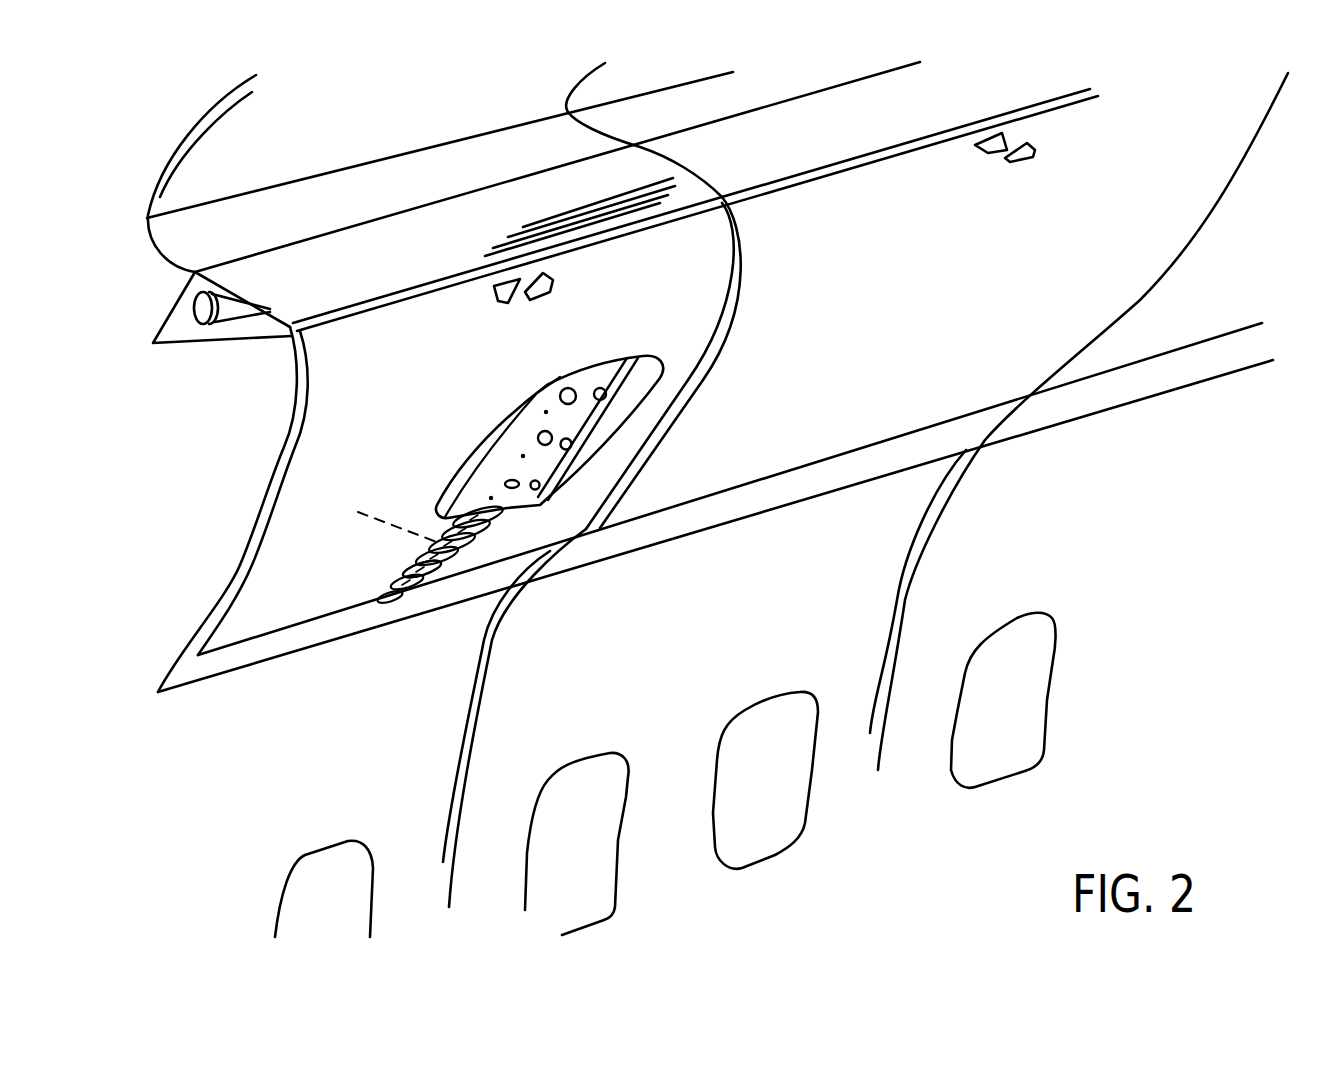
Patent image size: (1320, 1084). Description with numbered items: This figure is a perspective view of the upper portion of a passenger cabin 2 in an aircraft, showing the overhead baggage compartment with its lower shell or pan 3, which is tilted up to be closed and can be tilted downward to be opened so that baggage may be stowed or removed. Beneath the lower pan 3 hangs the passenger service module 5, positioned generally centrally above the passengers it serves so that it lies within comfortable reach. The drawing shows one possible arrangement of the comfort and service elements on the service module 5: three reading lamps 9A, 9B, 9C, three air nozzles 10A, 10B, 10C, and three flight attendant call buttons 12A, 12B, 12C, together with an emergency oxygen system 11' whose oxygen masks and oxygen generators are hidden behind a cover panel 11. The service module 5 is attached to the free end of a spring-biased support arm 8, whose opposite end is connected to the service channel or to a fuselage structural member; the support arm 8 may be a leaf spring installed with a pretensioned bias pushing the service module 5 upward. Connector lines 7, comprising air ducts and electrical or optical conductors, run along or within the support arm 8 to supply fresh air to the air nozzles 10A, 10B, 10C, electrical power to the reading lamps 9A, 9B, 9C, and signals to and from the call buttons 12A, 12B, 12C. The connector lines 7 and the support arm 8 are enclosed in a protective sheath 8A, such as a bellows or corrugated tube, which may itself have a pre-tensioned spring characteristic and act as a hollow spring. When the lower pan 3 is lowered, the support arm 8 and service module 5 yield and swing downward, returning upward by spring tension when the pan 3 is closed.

The passenger cabin 2 is at (1223, 535).
The lower shell or pan 3 is at (1133, 233).
The passenger service module 5 is at (511, 421).
The connector lines 7 is at (392, 517).
The spring-biased support arm 8 is at (362, 588).
The protective sheath 8A is at (417, 572).
The reading lamp 9A is at (569, 388).
The reading lamp 9B is at (538, 439).
The reading lamp 9C is at (517, 488).
The air nozzle 10A is at (607, 392).
The air nozzle 10B is at (572, 442).
The air nozzle 10C is at (541, 485).
The cover panel 11 is at (666, 390).
The emergency oxygen system 11' is at (647, 305).
The call button 12A is at (546, 410).
The call button 12B is at (522, 456).
The call button 12C is at (490, 498).